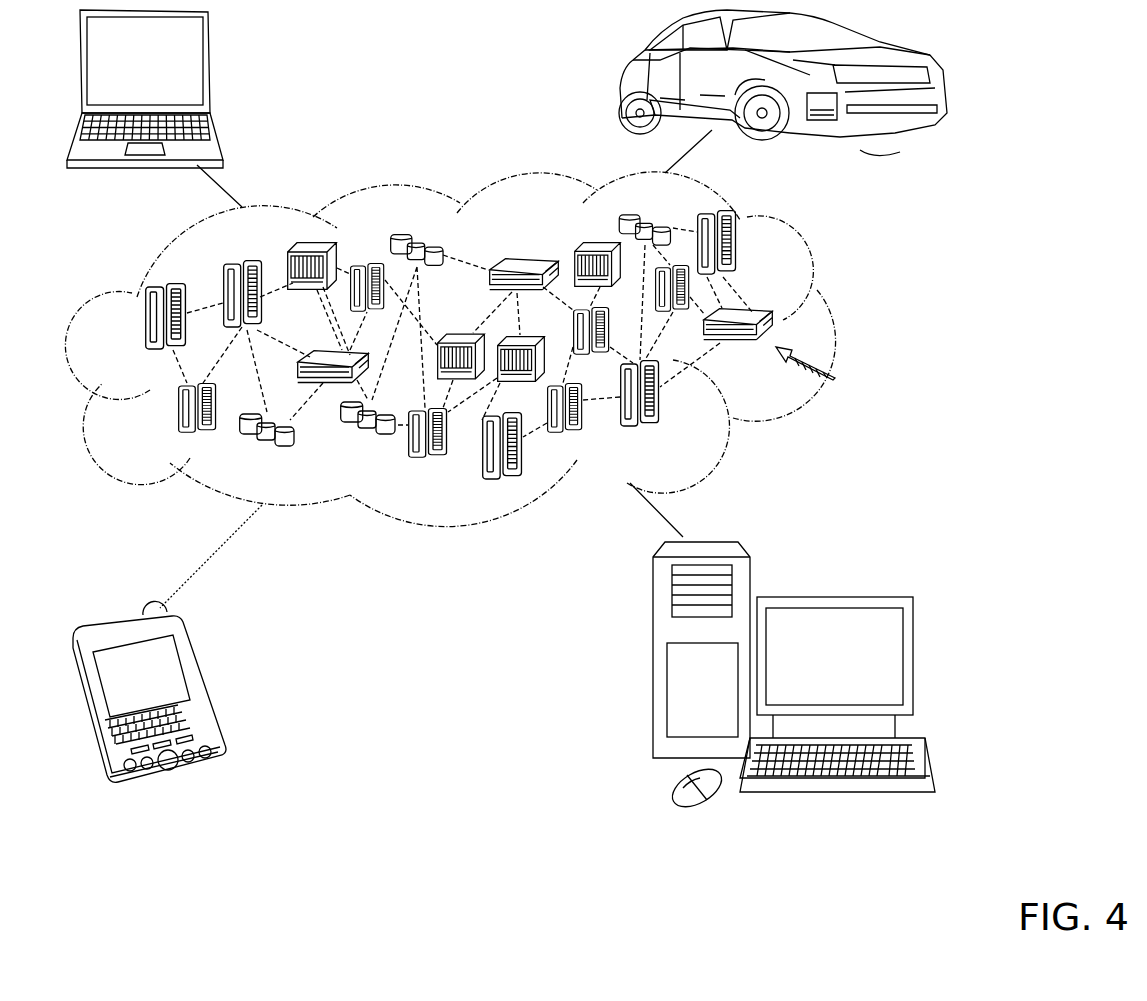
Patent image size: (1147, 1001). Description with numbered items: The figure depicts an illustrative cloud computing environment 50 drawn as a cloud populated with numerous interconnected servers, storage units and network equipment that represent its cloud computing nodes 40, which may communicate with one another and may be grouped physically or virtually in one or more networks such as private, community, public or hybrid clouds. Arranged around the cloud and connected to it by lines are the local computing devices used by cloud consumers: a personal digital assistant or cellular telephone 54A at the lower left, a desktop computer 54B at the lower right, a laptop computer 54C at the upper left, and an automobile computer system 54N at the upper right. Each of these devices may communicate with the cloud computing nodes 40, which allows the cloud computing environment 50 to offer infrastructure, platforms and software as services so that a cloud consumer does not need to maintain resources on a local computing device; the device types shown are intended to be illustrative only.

The laptop computer 54C is at (210, 64).
The automobile computer system 54N is at (620, 78).
The personal digital assistant (PDA) or cellular telephone 54A is at (203, 687).
The desktop computer 54B is at (832, 597).
The cloud computing environment 50 is at (832, 320).
The cloud computing nodes 40 is at (824, 372).